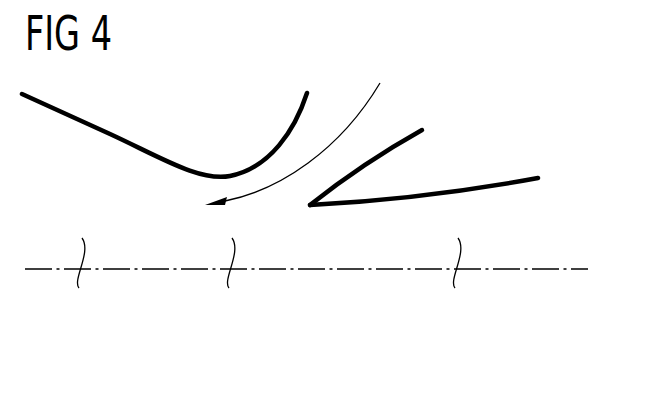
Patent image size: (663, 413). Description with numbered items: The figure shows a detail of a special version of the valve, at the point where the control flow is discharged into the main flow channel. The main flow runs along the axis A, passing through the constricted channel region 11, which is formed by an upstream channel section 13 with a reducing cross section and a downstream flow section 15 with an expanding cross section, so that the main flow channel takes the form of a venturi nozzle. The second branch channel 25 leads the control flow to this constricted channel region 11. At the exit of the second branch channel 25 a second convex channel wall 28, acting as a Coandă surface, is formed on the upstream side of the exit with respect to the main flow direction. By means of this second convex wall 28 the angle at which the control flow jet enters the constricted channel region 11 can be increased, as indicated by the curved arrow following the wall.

The second convex channel wall 28 is at (307, 104).
The second branch channel 25 is at (372, 157).
The axis A is at (568, 270).
The upstream channel section 13 is at (80, 281).
The constricted channel region 11 is at (228, 281).
The downstream flow section 15 is at (455, 281).